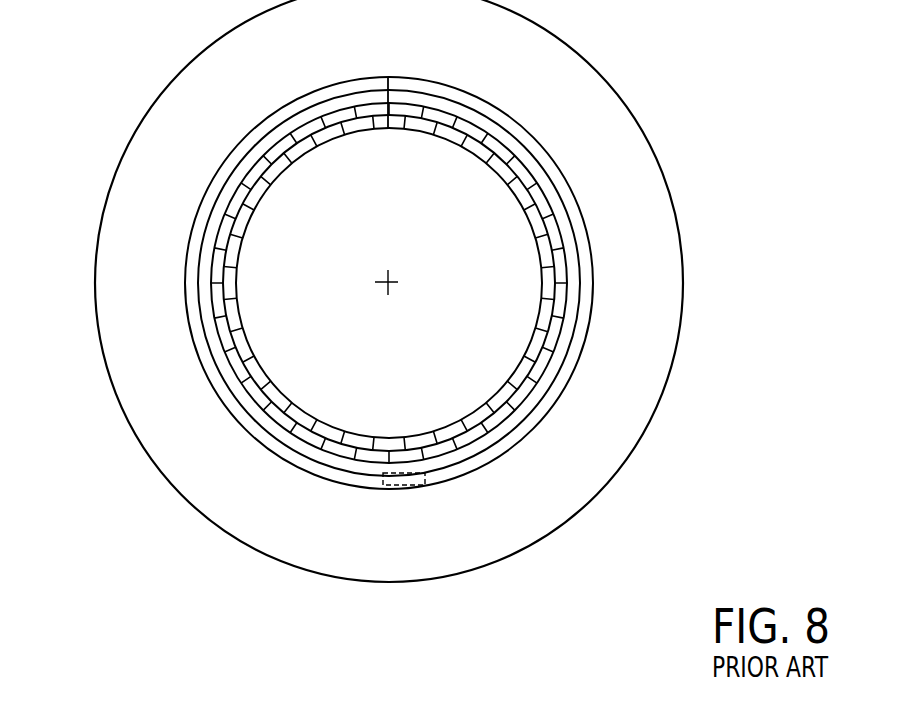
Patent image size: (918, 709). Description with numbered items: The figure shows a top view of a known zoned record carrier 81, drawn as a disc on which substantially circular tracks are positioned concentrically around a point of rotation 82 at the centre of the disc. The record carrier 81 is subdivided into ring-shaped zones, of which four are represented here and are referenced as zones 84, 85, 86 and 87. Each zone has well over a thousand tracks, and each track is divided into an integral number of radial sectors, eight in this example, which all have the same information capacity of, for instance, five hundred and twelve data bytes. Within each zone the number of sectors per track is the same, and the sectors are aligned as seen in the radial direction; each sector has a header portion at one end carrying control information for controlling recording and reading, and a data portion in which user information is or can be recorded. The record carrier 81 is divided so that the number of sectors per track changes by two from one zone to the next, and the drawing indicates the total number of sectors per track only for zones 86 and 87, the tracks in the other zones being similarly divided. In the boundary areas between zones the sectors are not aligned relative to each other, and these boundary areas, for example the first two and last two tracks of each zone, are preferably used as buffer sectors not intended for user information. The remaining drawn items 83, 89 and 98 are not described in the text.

The zoned record carrier 81 is at (146, 393).
The point of rotation 82 is at (391, 281).
The cell region 83 is at (413, 488).
The ring-shaped zone 84 is at (272, 443).
The ring-shaped zone 85 is at (312, 455).
The ring-shaped zone 86 is at (311, 442).
The ring-shaped zone 87 is at (347, 443).
The inner ring 89 is at (417, 443).
The cell boundaries 98 is at (442, 440).